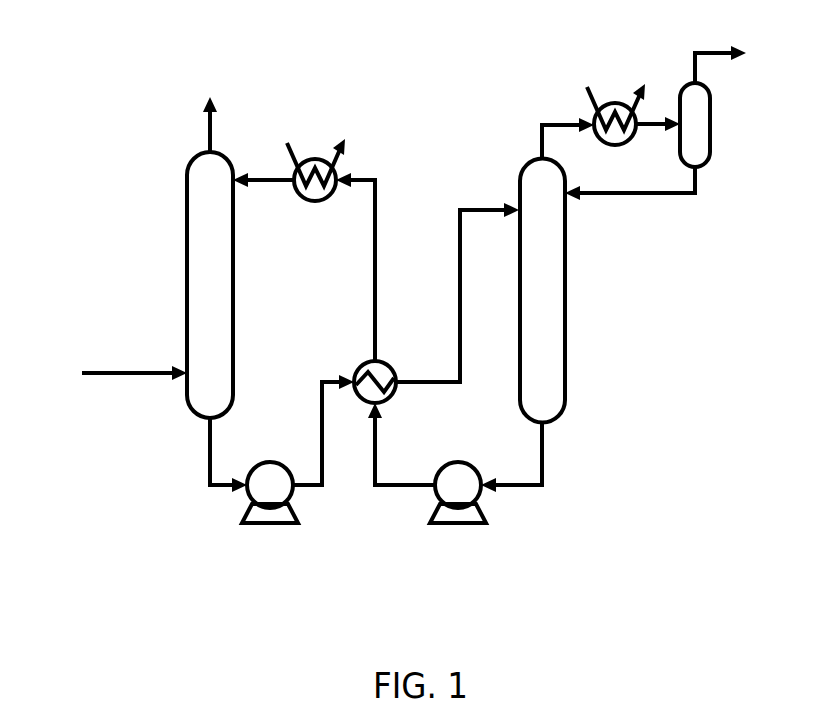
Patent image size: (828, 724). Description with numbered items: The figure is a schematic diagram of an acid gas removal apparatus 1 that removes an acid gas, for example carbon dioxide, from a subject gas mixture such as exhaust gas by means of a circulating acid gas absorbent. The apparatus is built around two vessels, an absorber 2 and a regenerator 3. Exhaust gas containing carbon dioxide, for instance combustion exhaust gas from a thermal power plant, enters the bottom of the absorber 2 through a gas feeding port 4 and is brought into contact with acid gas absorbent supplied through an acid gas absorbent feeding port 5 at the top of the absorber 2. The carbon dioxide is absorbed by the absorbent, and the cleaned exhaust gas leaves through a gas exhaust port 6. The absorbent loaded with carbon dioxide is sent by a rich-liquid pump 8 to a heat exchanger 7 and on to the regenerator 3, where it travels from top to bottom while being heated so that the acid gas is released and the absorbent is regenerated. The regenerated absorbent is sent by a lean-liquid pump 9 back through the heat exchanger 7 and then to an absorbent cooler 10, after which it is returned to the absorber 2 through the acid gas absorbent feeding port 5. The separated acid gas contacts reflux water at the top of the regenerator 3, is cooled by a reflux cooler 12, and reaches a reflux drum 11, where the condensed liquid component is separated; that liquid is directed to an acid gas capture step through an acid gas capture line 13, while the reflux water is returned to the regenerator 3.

The acid gas removal apparatus 1 is at (110, 70).
The absorber 2 is at (193, 230).
The regenerator 3 is at (560, 300).
The gas feeding port 4 is at (134, 401).
The acid gas absorbent feeding port 5 is at (242, 186).
The gas exhaust port 6 is at (205, 125).
The heat exchanger 7 is at (383, 395).
The rich-liquid pump 8 is at (278, 492).
The lean-liquid pump 9 is at (468, 492).
The absorbent cooler 10 is at (350, 167).
The reflux drum 11 is at (702, 143).
The reflux cooler 12 is at (580, 112).
The acid gas capture line 13 is at (690, 75).